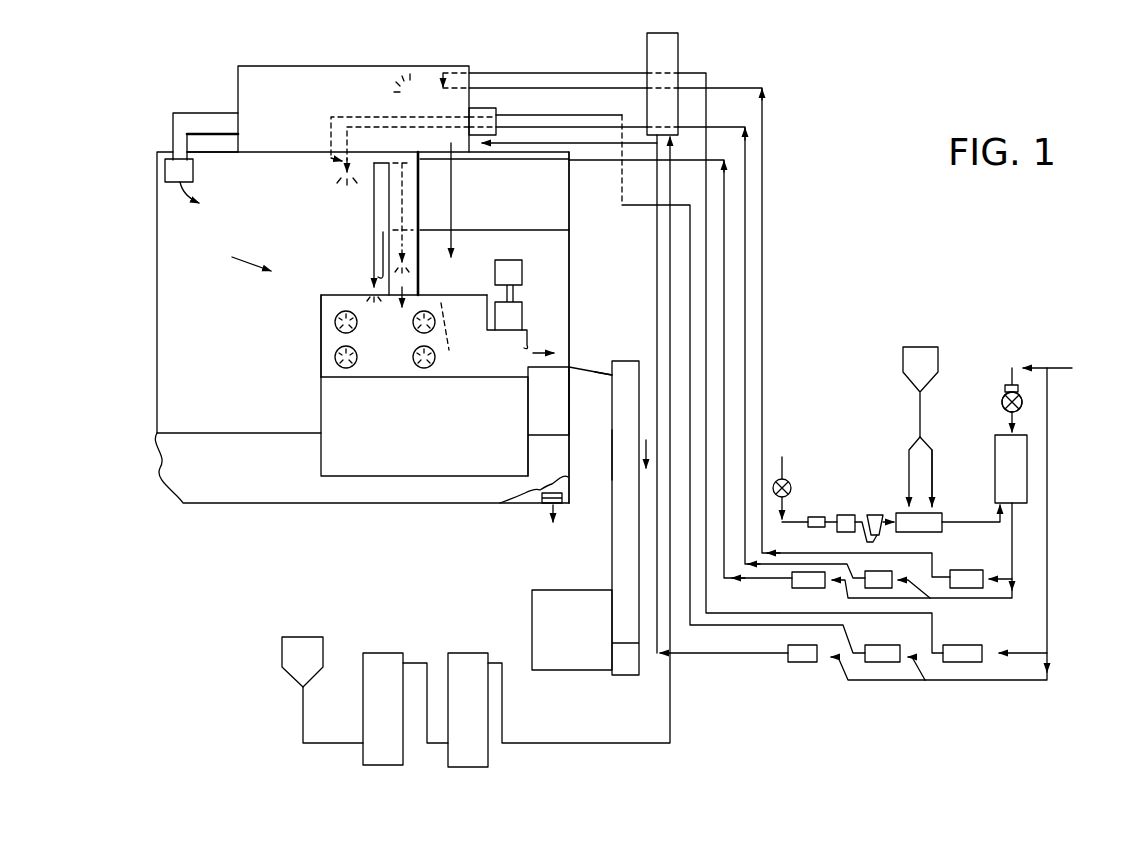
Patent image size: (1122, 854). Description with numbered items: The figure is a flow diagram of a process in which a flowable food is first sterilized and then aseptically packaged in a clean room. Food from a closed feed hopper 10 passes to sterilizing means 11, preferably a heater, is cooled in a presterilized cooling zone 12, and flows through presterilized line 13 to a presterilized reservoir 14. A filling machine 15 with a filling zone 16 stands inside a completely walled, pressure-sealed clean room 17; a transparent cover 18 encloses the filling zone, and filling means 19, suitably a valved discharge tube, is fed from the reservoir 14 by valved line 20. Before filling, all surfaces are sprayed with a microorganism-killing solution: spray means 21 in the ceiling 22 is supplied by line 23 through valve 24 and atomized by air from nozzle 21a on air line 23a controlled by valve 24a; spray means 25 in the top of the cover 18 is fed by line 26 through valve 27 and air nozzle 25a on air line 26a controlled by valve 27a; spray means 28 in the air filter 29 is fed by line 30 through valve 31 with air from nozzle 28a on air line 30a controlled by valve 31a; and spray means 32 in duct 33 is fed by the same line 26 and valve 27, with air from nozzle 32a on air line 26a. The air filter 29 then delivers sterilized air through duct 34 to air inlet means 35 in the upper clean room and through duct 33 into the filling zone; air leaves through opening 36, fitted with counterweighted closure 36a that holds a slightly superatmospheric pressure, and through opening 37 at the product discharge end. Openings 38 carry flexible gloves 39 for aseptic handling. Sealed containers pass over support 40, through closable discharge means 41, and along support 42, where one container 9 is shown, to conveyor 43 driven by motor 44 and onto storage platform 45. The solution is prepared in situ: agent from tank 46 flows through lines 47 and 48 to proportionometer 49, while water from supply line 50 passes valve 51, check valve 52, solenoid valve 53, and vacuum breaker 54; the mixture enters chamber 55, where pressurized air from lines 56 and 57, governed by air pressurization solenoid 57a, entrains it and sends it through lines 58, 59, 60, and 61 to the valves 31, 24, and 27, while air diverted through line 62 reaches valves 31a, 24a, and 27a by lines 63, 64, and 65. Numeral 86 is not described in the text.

The container 9 is at (593, 369).
The feed hopper 10 is at (279, 650).
The sterilizing means 11 is at (378, 767).
The cooling zone 12 is at (466, 769).
The line 13 is at (546, 745).
The reservoir 14 is at (673, 53).
The filling machine 15 is at (398, 432).
The filling zone 16 is at (320, 303).
The clean room 17 is at (234, 482).
The transparent cover 18 is at (320, 330).
The filling means 19 is at (452, 339).
The line 20 is at (453, 207).
The spray means 21 is at (338, 176).
The air nozzle 21a is at (322, 160).
The ceiling 22 is at (246, 154).
The line 23 is at (747, 188).
The air line 23a is at (692, 233).
The valve 24 is at (880, 571).
The valve 24a is at (896, 645).
The spray means 25 is at (368, 286).
The air nozzle 25a is at (381, 262).
The line 26 is at (726, 276).
The air line 26a is at (657, 290).
The valve 27 is at (792, 580).
The valve 27a is at (791, 662).
The spray means 28 is at (417, 84).
The air nozzle 28a is at (450, 68).
The air filter 29 is at (296, 105).
The line 30 is at (764, 138).
The air line 30a is at (708, 104).
The valve 31 is at (965, 570).
The valve 31a is at (976, 645).
The spray means 32 is at (405, 257).
The air nozzle 32a is at (412, 246).
The duct 33 is at (388, 212).
The air duct 34 is at (200, 112).
The air inlet means 35 is at (165, 172).
The opening 36 is at (528, 503).
The counterweighted closure 36a is at (547, 507).
The opening 37 is at (529, 353).
The openings 38 is at (414, 352).
The flexible glove 39 is at (335, 356).
The support 40 is at (553, 376).
The closable discharge means 41 is at (571, 320).
The support 42 is at (604, 382).
The conveyor 43 is at (611, 461).
The motor 44 is at (625, 676).
The temporary storage platform 45 is at (556, 637).
The tank 46 is at (921, 345).
The line 47 is at (909, 470).
The line 48 is at (933, 468).
The proportionometer 49 is at (940, 513).
The water supply line 50 is at (782, 457).
The valve 51 is at (790, 484).
The check valve 52 is at (816, 517).
The solenoid valve 53 is at (847, 515).
The vacuum breaker 54 is at (876, 515).
The chamber 55 is at (995, 442).
The air line 56 is at (1068, 368).
The air line 57 is at (1012, 366).
The air pressurization solenoid 57a is at (1004, 394).
The line 58 is at (1012, 536).
The line 59 is at (1014, 580).
The line 60 is at (934, 598).
The line 61 is at (843, 588).
The line 62 is at (1050, 411).
The line 63 is at (1033, 680).
The line 64 is at (927, 682).
The line 65 is at (846, 680).
The control unit 86 is at (497, 112).